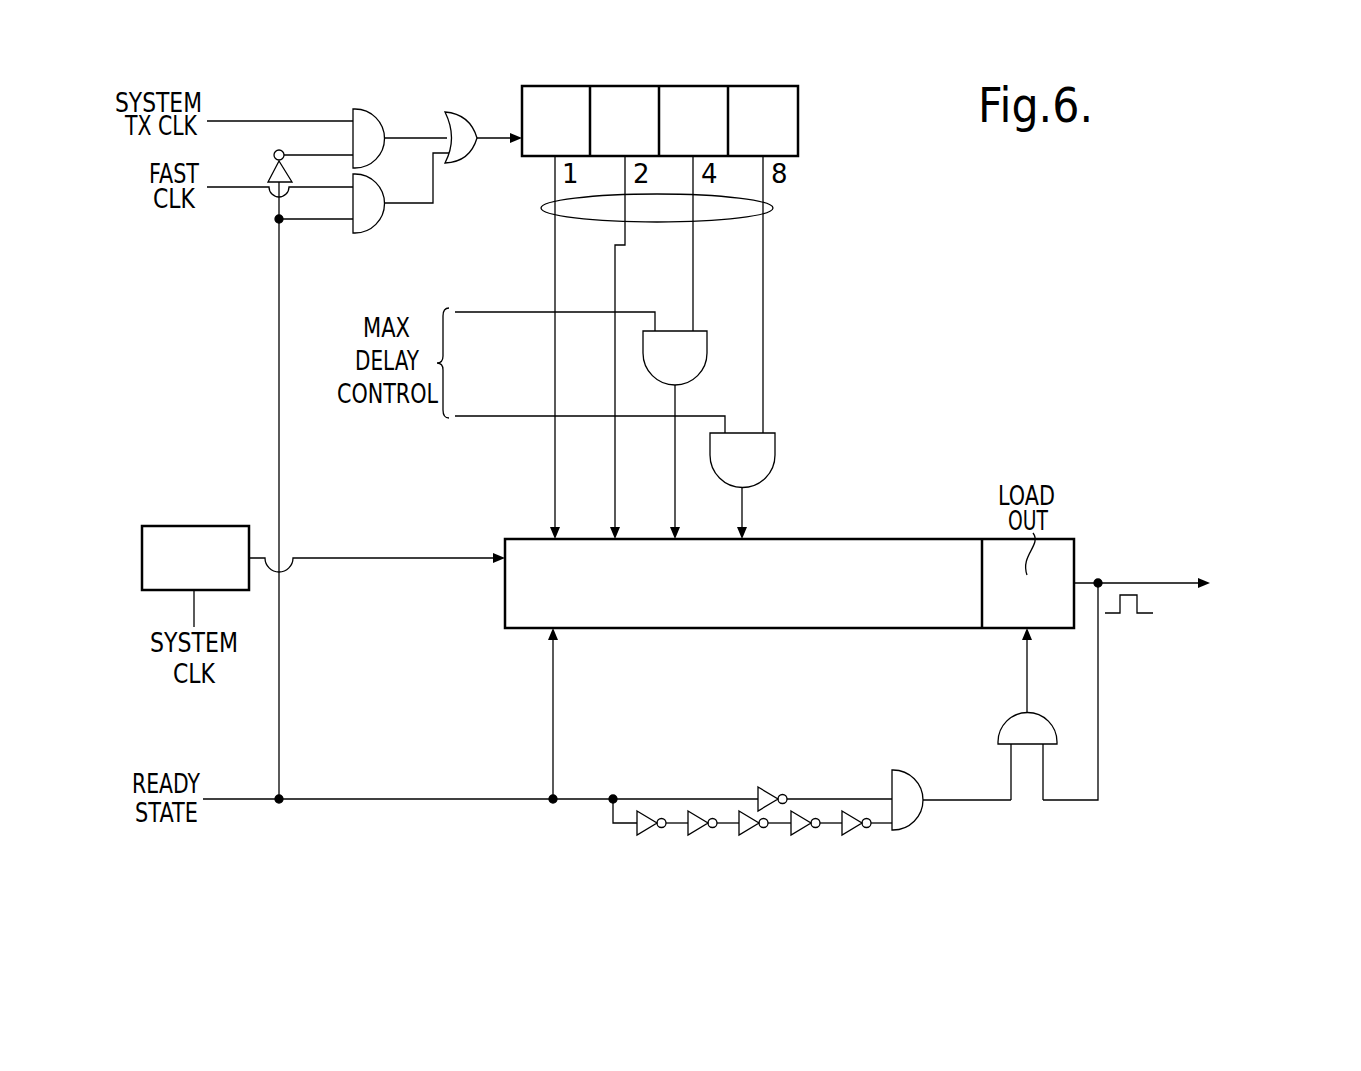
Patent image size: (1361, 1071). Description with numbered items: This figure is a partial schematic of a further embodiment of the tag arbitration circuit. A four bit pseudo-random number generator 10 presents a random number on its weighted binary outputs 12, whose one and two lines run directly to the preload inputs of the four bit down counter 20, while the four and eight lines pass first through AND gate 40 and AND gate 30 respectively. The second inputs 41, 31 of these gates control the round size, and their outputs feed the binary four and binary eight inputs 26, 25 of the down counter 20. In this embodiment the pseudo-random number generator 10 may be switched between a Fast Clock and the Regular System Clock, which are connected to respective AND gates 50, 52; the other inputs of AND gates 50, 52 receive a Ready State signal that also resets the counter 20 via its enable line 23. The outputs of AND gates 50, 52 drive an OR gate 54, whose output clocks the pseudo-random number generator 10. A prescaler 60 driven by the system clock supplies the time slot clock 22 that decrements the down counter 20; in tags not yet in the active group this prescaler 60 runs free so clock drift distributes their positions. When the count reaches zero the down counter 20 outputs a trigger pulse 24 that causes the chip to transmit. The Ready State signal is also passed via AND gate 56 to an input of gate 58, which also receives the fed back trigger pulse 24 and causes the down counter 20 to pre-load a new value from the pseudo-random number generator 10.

The pseudo-random number generator 10 is at (798, 113).
The outputs 12 is at (773, 208).
The down counter 20 is at (903, 629).
The time slot clock 22 is at (476, 561).
The enable line 23 is at (553, 660).
The trigger pulse 24 is at (1153, 583).
The binary 8 input 25 is at (742, 500).
The binary 4 input 26 is at (675, 503).
The AND gate 30 is at (775, 455).
The AND gate input 31 is at (468, 416).
The AND gate 40 is at (707, 350).
The AND gate input 41 is at (468, 312).
The AND gate 50 is at (386, 222).
The AND gate 52 is at (372, 109).
The OR gate 54 is at (466, 165).
The AND gate 56 is at (915, 822).
The gate 58 is at (1050, 722).
The prescaler 60 is at (192, 526).